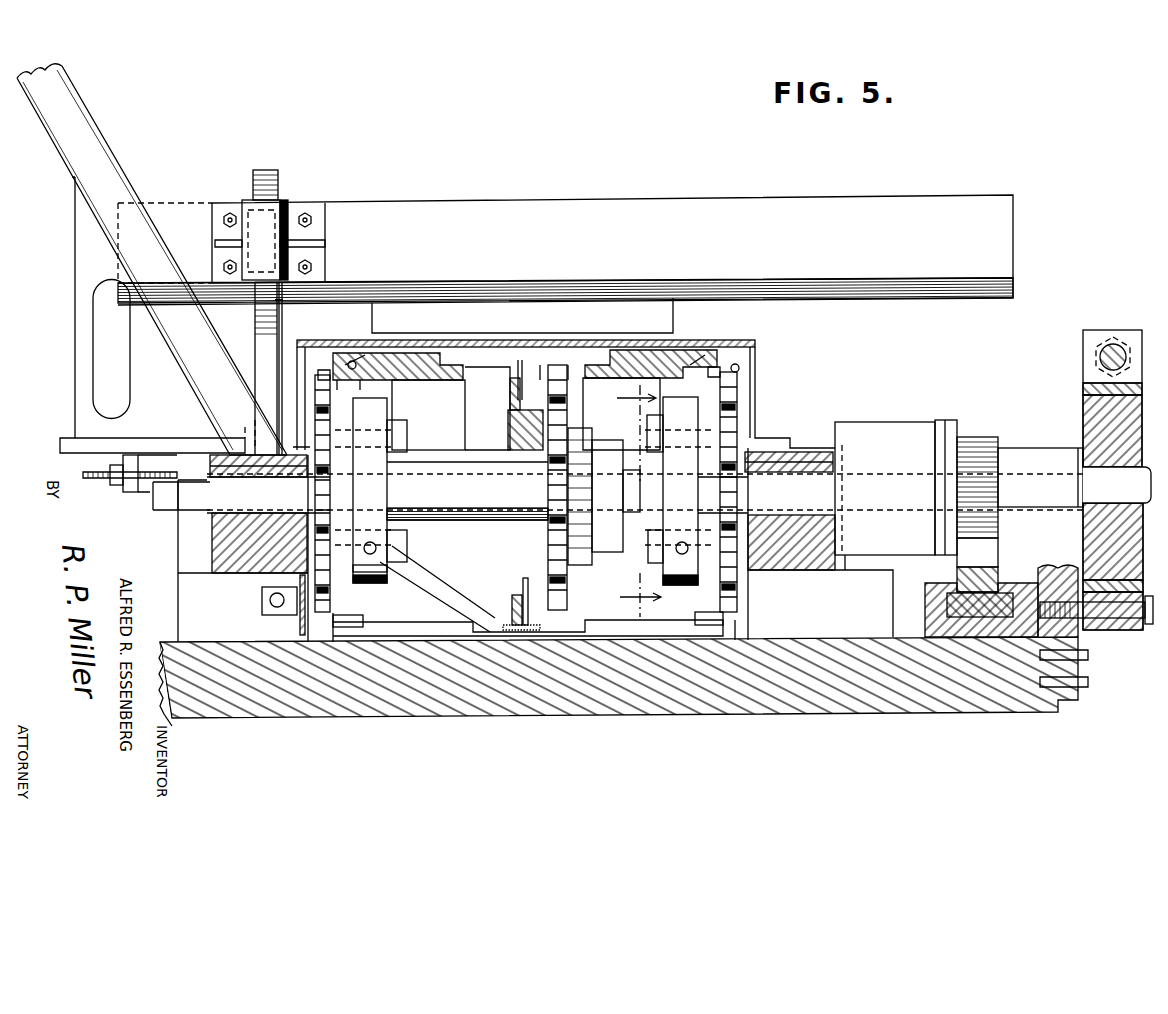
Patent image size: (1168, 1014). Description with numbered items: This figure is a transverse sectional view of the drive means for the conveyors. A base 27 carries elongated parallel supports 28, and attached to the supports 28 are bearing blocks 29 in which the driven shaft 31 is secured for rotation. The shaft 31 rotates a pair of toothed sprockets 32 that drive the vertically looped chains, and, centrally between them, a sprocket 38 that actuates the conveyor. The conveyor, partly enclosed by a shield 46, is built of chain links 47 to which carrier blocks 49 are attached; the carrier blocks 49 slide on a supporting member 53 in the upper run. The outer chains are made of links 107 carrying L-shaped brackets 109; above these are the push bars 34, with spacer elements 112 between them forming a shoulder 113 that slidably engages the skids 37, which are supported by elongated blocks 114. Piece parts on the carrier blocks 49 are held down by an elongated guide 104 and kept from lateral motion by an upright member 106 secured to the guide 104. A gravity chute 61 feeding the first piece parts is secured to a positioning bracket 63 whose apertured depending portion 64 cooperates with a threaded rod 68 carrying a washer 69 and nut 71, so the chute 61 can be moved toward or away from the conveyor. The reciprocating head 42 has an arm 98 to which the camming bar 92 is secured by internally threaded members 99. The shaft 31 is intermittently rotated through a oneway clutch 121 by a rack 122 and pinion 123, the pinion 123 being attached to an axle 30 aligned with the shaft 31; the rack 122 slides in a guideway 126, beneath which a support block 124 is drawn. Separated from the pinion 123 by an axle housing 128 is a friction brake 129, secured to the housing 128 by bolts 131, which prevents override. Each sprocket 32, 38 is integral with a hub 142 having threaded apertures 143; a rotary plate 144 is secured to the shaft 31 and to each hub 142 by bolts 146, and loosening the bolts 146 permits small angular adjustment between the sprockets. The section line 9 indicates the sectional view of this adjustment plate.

The gravity chute 61 is at (120, 174).
The arm 98 is at (245, 222).
The internally threaded members 99 is at (288, 205).
The head 42 is at (546, 196).
The positioning bracket 63 is at (75, 335).
The shield 46 is at (256, 358).
The camming bar 92 is at (282, 340).
The threaded rod 68 is at (83, 475).
The nut 71 is at (110, 477).
The washer 69 is at (128, 492).
The apertured depending portion 64 is at (135, 488).
The driven shaft 31 is at (166, 502).
The supports 28 is at (195, 613).
The bearing blocks 29 is at (798, 450).
The sprocket 38 is at (558, 538).
The toothed sprockets 32 is at (318, 398).
The skids 37 is at (412, 374).
The shoulder 113 is at (360, 370).
The spacer elements 112 is at (322, 370).
The brackets 109 is at (352, 361).
The links 107 is at (366, 372).
The push bars 34 is at (435, 380).
The elongated blocks 114 is at (562, 408).
The carrier blocks 49 is at (518, 394).
The supporting member 53 is at (520, 423).
The chain links 47 is at (568, 380).
The hub 142 is at (556, 465).
The threaded apertures 143 is at (370, 440).
The bolts 146 is at (398, 450).
The rotary plate 144 is at (368, 575).
The section line 9- 9 is at (639, 497).
The elongated guide 104 is at (525, 595).
The upright member 106 is at (516, 600).
The base 27 is at (175, 658).
The oneway clutch 121 is at (870, 436).
The pinion 123 is at (976, 438).
The axle housing 128 is at (1010, 448).
The axle 30 is at (1038, 466).
The friction brake 129 is at (1097, 438).
The rack 122 is at (987, 552).
The bearing support 124 is at (990, 610).
The guideway 126 is at (937, 625).
The bolts 131 is at (1150, 620).